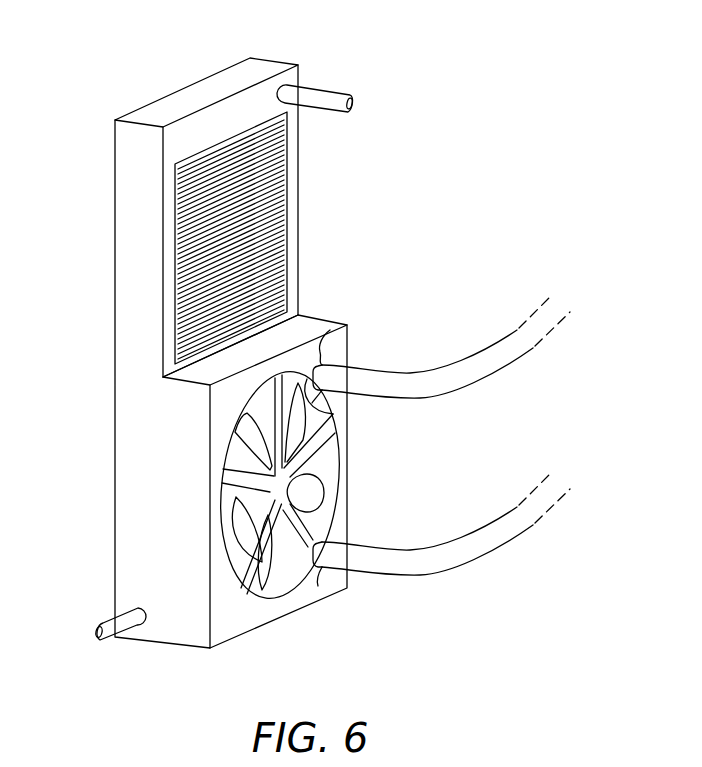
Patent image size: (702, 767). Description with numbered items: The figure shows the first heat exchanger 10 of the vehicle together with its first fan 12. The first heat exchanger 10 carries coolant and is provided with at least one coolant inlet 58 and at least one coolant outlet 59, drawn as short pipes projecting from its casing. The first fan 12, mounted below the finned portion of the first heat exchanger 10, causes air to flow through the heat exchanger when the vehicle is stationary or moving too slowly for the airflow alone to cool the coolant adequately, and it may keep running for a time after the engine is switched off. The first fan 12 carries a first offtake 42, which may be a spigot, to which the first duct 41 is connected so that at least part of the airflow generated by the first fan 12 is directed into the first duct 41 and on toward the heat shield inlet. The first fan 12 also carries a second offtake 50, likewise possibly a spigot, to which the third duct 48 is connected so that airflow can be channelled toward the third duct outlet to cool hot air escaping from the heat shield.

The first heat exchanger 10 is at (217, 80).
The first fan 12 is at (237, 623).
The first duct 41 is at (452, 387).
The first offtake 42 is at (340, 323).
The third duct 48 is at (450, 563).
The second offtake 50 is at (325, 593).
The coolant inlet 58 is at (110, 622).
The coolant outlet 59 is at (330, 93).